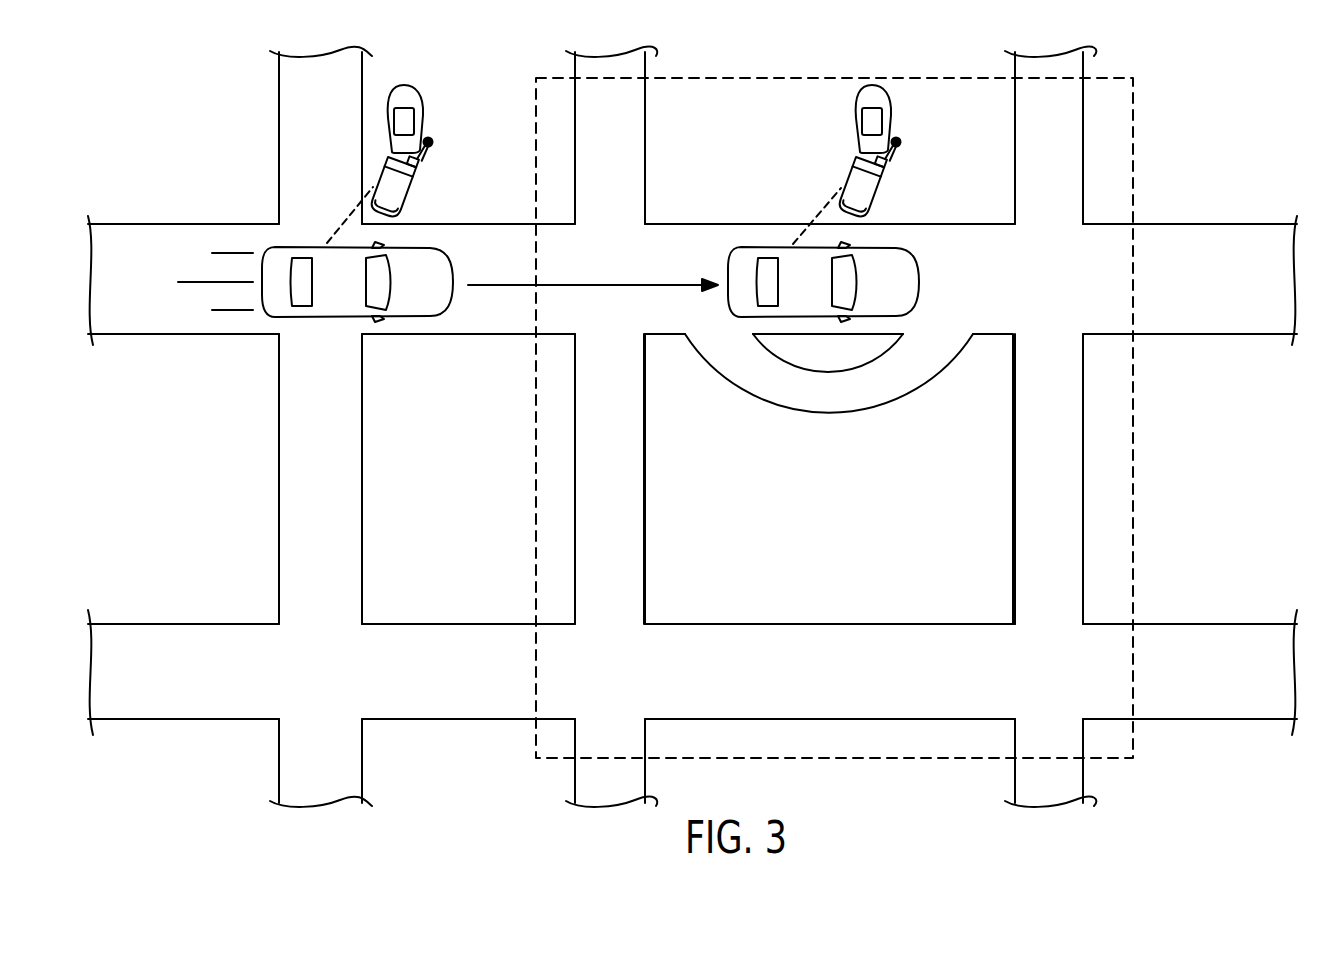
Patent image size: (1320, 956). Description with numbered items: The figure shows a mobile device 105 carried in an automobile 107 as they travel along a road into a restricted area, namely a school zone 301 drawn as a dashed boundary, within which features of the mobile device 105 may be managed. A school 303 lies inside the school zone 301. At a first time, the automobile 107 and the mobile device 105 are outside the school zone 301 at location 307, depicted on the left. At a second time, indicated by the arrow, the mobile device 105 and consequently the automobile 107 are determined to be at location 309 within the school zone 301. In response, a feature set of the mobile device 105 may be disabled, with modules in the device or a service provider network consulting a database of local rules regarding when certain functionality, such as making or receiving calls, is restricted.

The mobile device 105 is at (420, 188).
The automobile 107 is at (313, 246).
The school zone 301 is at (1133, 279).
The school 303 is at (1015, 478).
The location 307 is at (432, 141).
The location 309 is at (900, 141).